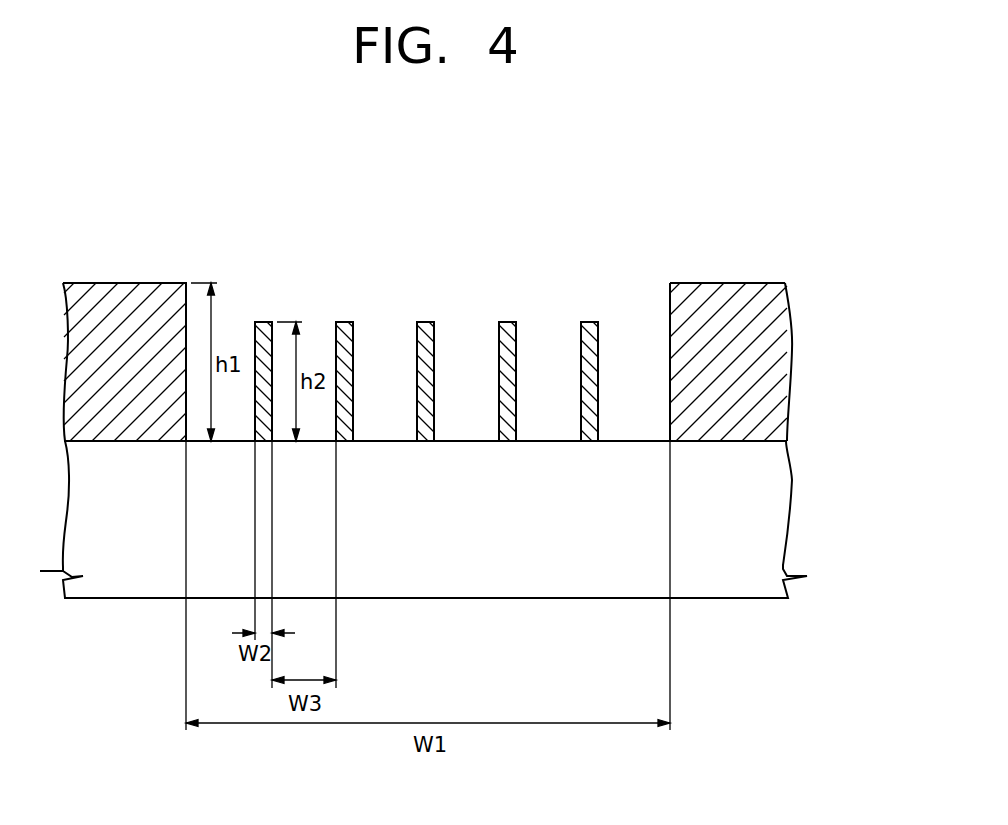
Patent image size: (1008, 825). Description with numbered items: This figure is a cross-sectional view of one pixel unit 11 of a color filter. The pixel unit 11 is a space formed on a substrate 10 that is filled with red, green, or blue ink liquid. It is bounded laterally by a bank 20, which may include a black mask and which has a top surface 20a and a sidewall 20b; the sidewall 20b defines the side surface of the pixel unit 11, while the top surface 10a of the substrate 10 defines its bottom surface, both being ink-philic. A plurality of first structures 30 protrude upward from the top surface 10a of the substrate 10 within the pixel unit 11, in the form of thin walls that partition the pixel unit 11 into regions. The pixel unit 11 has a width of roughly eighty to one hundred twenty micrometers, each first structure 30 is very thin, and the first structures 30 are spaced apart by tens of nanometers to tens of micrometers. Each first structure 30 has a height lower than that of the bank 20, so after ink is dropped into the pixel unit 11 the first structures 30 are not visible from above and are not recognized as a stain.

The substrate 10 is at (780, 510).
The top surface of the substrate 10a is at (632, 441).
The pixel unit 11 is at (395, 350).
The bank 20 is at (780, 345).
The top surface of the bank 20a is at (727, 283).
The sidewall of the bank 20b is at (670, 318).
The first structure 30 is at (507, 328).